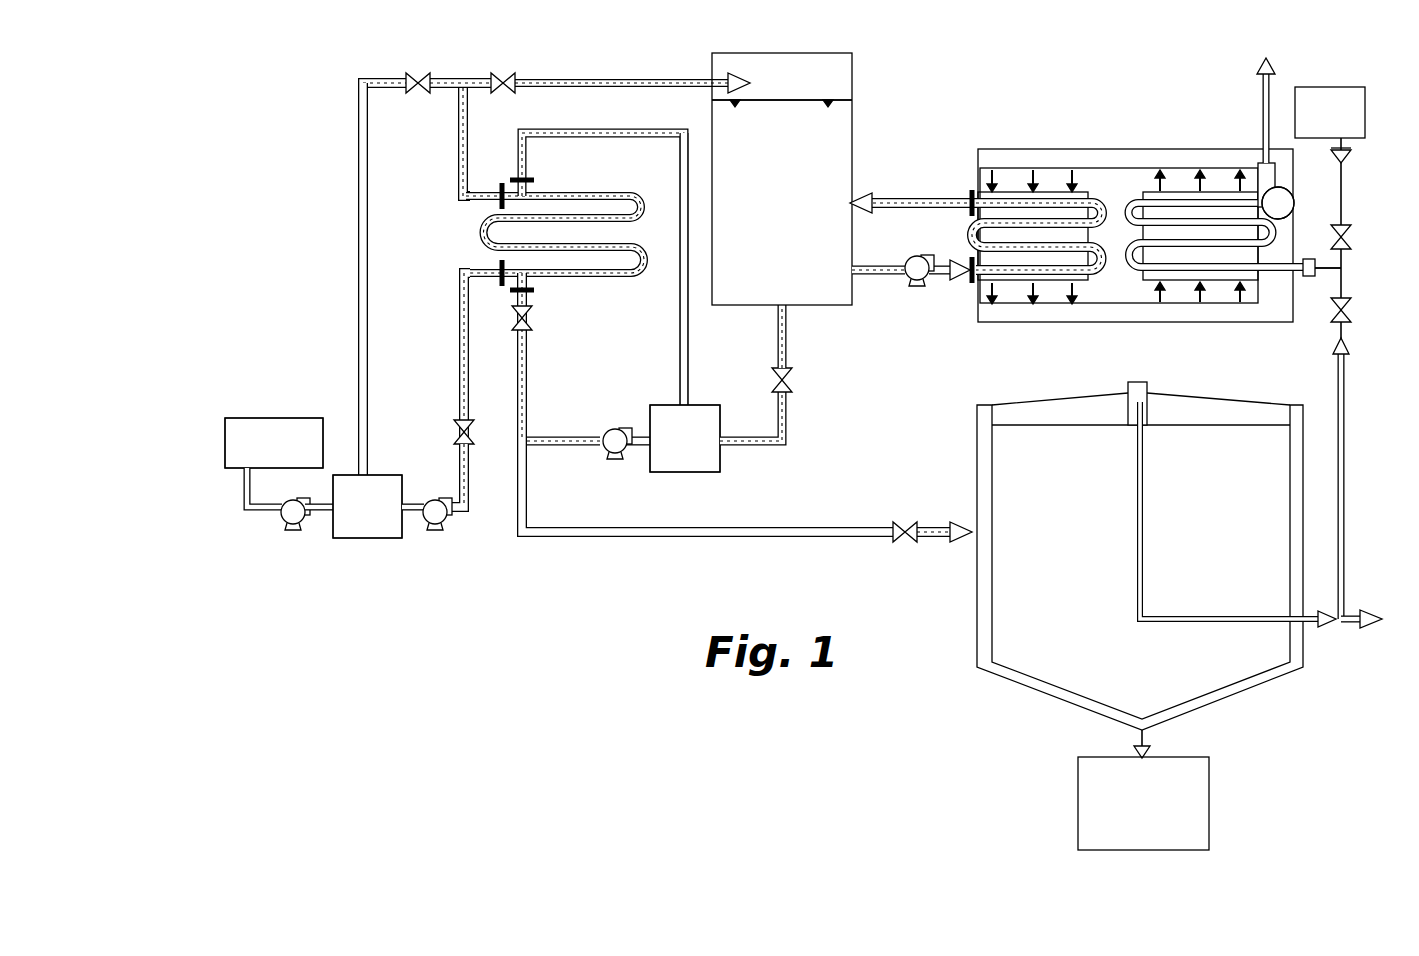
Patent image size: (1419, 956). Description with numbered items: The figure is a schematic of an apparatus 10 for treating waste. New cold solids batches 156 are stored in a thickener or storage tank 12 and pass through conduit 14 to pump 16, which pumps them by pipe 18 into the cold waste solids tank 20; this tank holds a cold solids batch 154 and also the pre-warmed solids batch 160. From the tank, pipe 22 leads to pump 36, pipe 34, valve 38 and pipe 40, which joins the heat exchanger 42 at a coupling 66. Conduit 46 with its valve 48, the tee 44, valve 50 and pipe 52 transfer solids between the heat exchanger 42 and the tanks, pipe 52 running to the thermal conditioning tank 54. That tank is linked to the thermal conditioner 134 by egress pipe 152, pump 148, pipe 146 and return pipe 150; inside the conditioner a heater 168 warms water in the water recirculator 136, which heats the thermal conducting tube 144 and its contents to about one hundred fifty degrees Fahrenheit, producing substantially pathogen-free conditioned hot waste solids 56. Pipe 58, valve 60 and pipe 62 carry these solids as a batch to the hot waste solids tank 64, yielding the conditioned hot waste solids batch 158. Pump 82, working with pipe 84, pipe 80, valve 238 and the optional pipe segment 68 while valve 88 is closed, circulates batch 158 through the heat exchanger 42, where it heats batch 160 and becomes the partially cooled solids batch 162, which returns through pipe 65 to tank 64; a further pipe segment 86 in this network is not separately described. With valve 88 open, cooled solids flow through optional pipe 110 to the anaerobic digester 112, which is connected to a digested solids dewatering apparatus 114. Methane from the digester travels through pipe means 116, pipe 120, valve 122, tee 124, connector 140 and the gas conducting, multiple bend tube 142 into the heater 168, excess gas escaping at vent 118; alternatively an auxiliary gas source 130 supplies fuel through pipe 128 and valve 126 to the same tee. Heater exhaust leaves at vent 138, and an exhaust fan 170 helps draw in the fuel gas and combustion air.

The apparatus 10 is at (1143, 48).
The thickener or storage tank 12 is at (225, 440).
The conduit 14 is at (243, 484).
The pump 16 is at (281, 520).
The pipe 18 is at (320, 512).
The cold waste solids tank 20 is at (368, 538).
The pipe 22 is at (410, 514).
The pipe 34 is at (462, 475).
The pump 36 is at (442, 526).
The valve 38 is at (460, 425).
The pipe 40 is at (470, 355).
The heat exchanger 42 is at (480, 230).
The tee 44 is at (470, 100).
The conduit 46 is at (358, 135).
The valve 48 is at (418, 72).
The valve 50 is at (500, 72).
The pipe 52 is at (618, 78).
The thermal conditioning tank 54 is at (818, 53).
The conditioned hot waste solids 56 is at (828, 175).
The pipe 58 is at (778, 346).
The valve 60 is at (795, 378).
The pipe 62 is at (790, 440).
The hot waste solids tank 64 is at (710, 472).
The pipe 65 is at (680, 315).
The coupling 66 is at (512, 178).
The pipe segment 68 is at (534, 290).
The pipe 80 is at (528, 422).
The pump 82 is at (608, 455).
The pipe 84 is at (568, 446).
The line 86 is at (518, 462).
The valve 88 is at (906, 520).
The pipe 110 is at (935, 538).
The anaerobic digester 112 is at (977, 625).
The digested solids dewatering apparatus 114 is at (1210, 790).
The pipe means 116 is at (1137, 518).
The vent 118 is at (1356, 626).
The pipe 120 is at (1338, 382).
The valve 122 is at (1350, 312).
The tee 124 is at (1346, 275).
The valve 126 is at (1350, 238).
The pipe 128 is at (1346, 185).
The auxiliary gas source 130 is at (1320, 87).
The thermal conditioner 134 is at (1050, 149).
The water recirculator 136 is at (1125, 168).
The vent 138 is at (1272, 78).
The connector 140 is at (1310, 278).
The gas conducting, multiple bend tube 142 is at (1285, 290).
The thermal conducting tube 144 is at (995, 275).
The pipe 146 is at (958, 266).
The pump 148 is at (905, 262).
The return pipe 150 is at (868, 198).
The egress pipe 152 is at (880, 278).
The cold solids batch 154 is at (380, 478).
The new cold solids batch 156 is at (262, 430).
The conditioned hot waste solids batch 158 is at (702, 456).
The pre-warmed solids batch 160 is at (358, 243).
The partially cooled solids batch 162 is at (595, 138).
The heater 168 is at (1290, 207).
The exhaust fan 170 is at (1258, 172).
The valve 238 is at (530, 325).